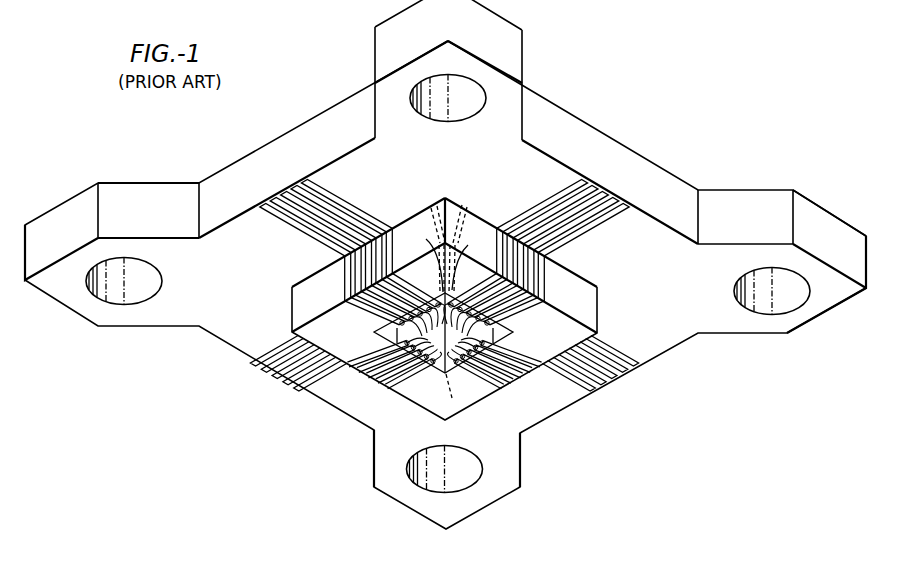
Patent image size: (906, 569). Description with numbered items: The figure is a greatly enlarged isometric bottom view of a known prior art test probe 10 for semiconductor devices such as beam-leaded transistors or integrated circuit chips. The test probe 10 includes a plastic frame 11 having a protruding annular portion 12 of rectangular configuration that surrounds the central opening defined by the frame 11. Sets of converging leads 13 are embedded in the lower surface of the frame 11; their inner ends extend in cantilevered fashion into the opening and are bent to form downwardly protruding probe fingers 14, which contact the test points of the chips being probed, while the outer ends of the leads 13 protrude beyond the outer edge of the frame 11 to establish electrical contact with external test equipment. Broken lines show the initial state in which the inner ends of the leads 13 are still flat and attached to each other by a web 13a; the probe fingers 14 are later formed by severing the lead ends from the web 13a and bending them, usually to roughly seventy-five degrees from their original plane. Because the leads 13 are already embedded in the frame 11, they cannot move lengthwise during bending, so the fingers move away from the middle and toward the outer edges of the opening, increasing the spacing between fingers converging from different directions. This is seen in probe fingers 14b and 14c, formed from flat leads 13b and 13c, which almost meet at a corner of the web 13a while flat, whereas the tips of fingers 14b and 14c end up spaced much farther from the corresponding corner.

The test probe 10 is at (652, 141).
The plastic frame 11 is at (753, 333).
The protruding annular portion 12 is at (598, 308).
The leads 13 is at (598, 228).
The web 13a is at (455, 395).
The flat lead 13b is at (432, 206).
The flat lead 13c is at (464, 201).
The probe fingers 14 is at (432, 369).
The probe finger 14b is at (422, 257).
The probe finger 14c is at (474, 259).